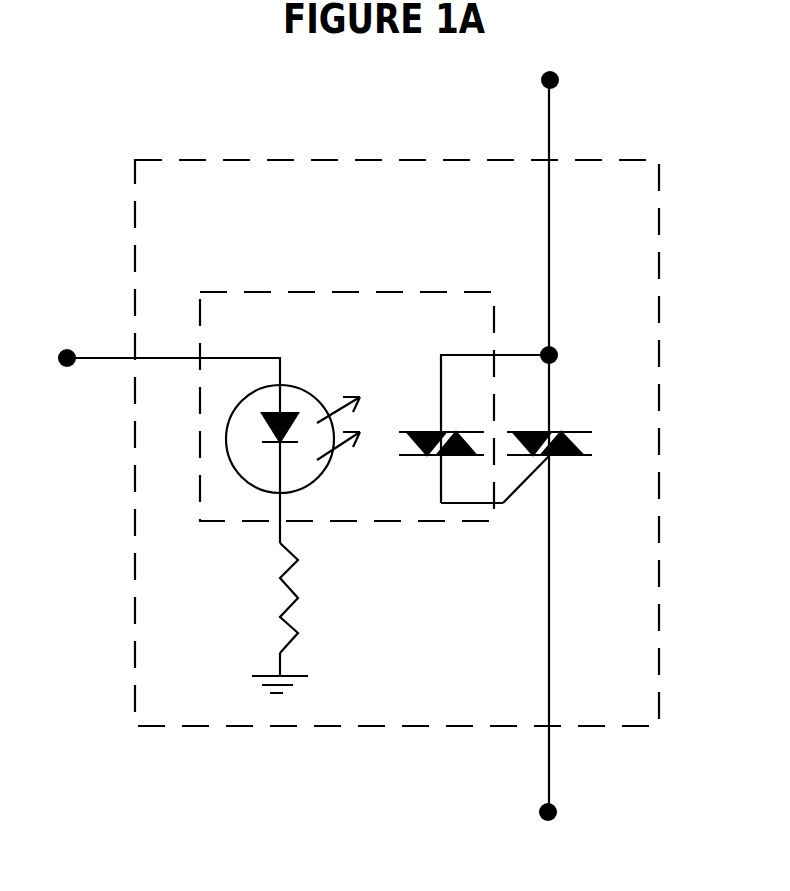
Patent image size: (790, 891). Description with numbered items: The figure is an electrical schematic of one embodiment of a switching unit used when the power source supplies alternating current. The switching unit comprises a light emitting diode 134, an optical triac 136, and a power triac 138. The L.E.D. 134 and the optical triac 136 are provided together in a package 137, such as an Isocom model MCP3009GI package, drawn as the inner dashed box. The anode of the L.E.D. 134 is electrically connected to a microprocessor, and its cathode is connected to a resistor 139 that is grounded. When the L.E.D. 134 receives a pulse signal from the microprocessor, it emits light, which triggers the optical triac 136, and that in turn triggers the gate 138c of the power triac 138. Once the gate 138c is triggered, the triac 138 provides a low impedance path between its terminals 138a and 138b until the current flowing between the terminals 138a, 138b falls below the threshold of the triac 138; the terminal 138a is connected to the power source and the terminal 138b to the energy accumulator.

The light emitting diode 134 is at (297, 387).
The optical triac 136 is at (413, 422).
The package 137 is at (352, 283).
The power triac 138 is at (575, 423).
The terminal 138a is at (567, 73).
The terminal 138b is at (565, 795).
The gate 138c is at (505, 508).
The resistor 139 is at (312, 600).